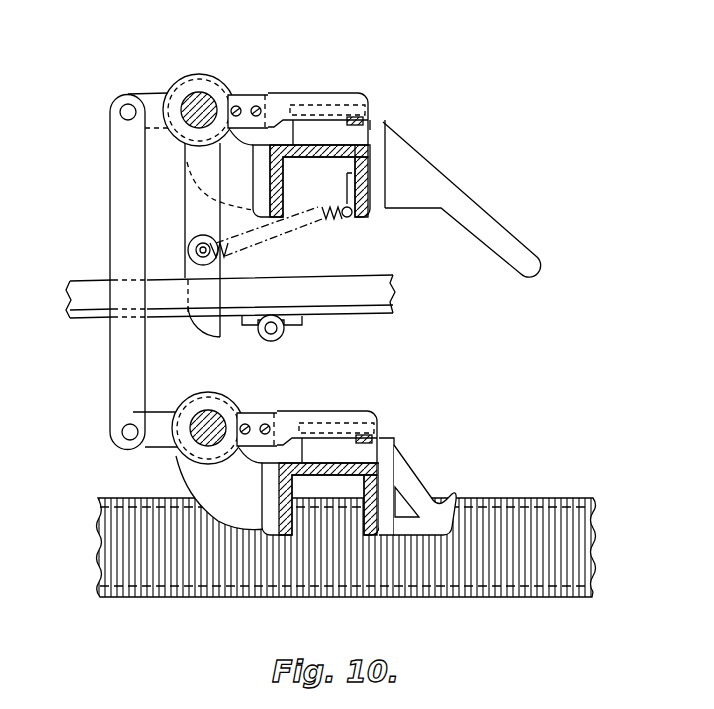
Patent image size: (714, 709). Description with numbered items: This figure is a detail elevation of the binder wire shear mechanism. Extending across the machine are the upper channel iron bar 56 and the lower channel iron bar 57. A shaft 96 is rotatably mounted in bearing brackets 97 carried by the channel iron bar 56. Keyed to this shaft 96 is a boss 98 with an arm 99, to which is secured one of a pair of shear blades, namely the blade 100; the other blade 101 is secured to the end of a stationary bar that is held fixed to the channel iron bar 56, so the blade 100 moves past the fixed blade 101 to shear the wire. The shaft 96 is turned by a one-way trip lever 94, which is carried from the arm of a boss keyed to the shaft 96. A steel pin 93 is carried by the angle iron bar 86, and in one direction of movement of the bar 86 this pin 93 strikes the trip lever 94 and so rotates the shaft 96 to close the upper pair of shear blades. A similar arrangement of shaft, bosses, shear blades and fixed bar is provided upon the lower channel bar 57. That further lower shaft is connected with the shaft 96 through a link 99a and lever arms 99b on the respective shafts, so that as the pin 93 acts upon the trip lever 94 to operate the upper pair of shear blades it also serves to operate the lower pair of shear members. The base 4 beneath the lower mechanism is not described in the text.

The wood base 4 is at (104, 496).
The upper channel iron bar 56 is at (285, 184).
The lower channel iron bar 57 is at (382, 474).
The angle iron bar 86 is at (382, 290).
The steel pin 93 is at (283, 330).
The one-way trip lever 94 is at (206, 328).
The shaft 96 is at (191, 92).
The bearing brackets 97 is at (219, 240).
The boss 98 is at (216, 74).
The arm 99 is at (263, 93).
The link 99a is at (108, 205).
The lever arms 99b is at (157, 130).
The shear blade 100 is at (359, 90).
The shear blade 101 is at (366, 132).